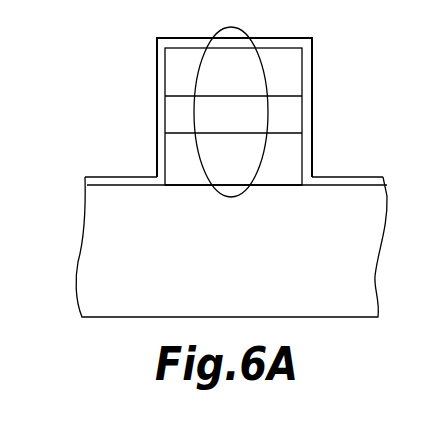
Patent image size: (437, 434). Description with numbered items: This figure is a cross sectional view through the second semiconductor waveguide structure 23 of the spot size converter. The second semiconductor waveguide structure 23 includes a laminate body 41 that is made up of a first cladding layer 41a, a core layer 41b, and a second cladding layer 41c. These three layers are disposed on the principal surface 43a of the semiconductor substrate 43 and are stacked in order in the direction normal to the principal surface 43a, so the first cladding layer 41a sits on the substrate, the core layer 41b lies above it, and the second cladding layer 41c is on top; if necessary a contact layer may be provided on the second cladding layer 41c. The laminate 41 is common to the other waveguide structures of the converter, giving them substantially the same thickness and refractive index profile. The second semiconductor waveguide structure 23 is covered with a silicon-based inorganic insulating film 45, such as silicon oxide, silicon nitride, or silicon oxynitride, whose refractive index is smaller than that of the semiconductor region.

The second semiconductor waveguide structure 23 is at (268, 70).
The laminate body 41 is at (195, 75).
The first cladding layer 41a is at (257, 174).
The core layer 41b is at (257, 127).
The second cladding layer 41c is at (257, 83).
The semiconductor substrate 43 is at (102, 214).
The principal surface 43a is at (116, 178).
The silicon-based inorganic insulating film 45 is at (308, 148).